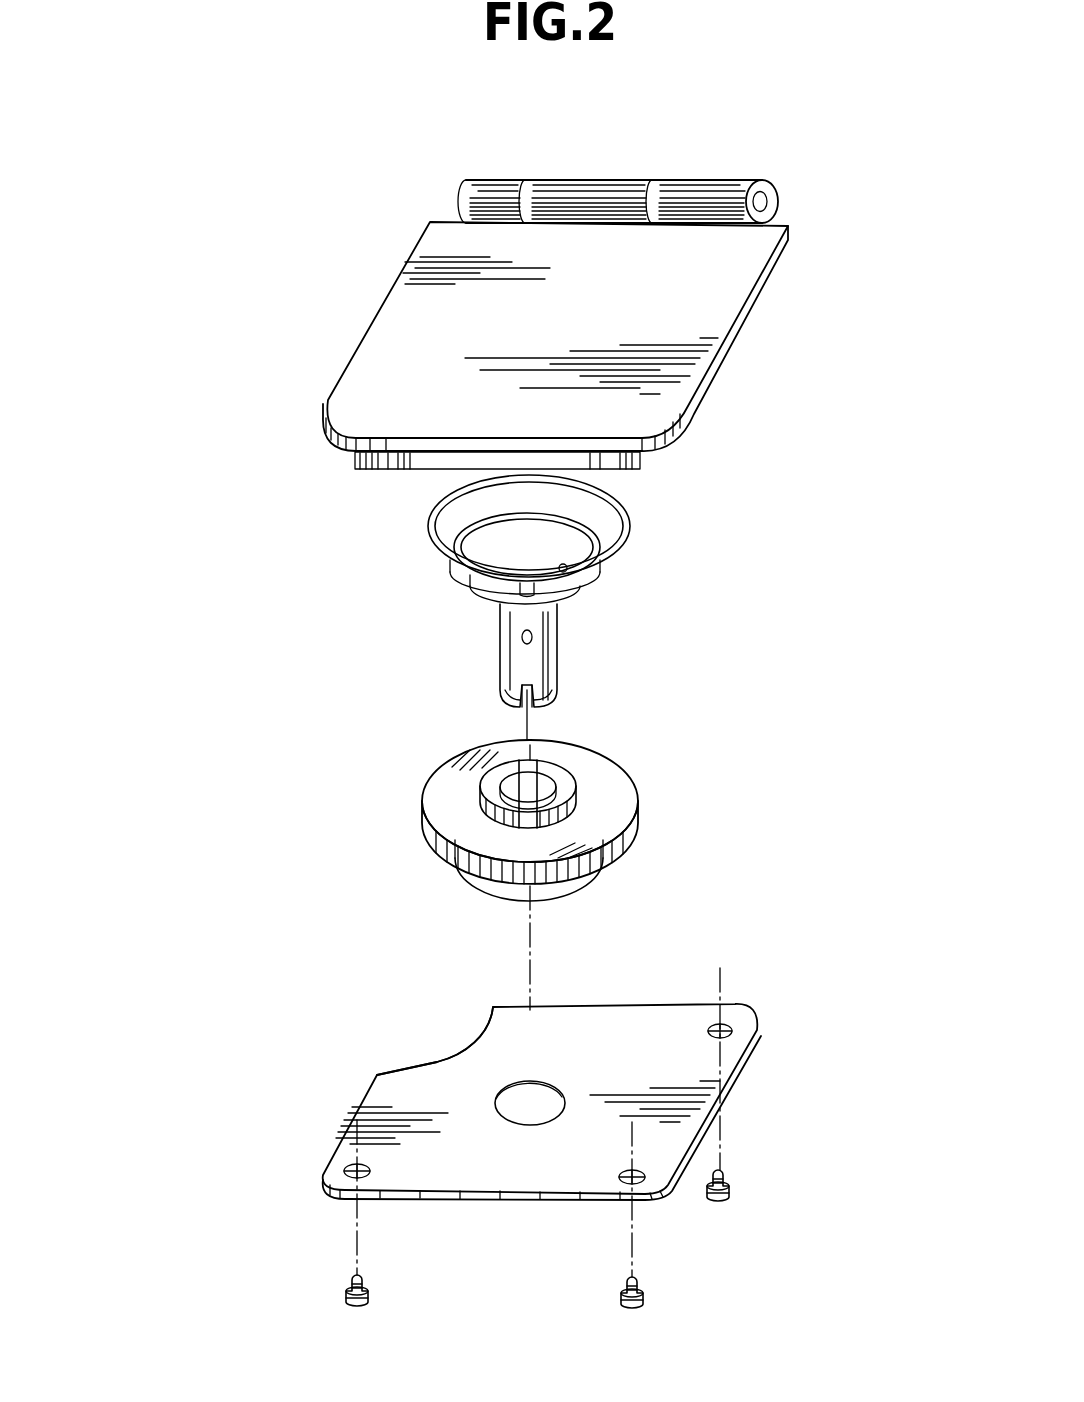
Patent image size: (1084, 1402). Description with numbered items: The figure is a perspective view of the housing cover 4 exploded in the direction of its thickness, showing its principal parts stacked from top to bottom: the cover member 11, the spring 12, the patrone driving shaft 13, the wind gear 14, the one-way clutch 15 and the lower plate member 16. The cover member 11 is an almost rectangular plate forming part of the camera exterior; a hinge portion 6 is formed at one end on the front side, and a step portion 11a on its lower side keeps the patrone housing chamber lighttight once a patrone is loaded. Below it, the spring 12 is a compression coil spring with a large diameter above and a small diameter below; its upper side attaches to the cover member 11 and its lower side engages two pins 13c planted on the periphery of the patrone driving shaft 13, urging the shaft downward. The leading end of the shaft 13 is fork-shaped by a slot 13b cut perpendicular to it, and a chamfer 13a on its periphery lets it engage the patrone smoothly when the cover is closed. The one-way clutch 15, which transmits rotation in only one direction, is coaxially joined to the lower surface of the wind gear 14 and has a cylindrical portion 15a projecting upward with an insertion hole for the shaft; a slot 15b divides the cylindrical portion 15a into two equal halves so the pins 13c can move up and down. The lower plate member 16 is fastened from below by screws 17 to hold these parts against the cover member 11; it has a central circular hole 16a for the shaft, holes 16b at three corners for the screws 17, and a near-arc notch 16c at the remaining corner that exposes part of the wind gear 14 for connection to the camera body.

The housing cover 4 is at (694, 633).
The hinge portion 6 is at (714, 193).
The cover member 11 is at (405, 310).
The step portion 11a is at (380, 462).
The spring 12 is at (425, 530).
The patrone driving shaft 13 is at (498, 666).
The chamfer 13a is at (548, 697).
The slot 13b is at (523, 705).
The pins 13c is at (535, 633).
The wind gear 14 is at (450, 795).
The one-way clutch 15 is at (488, 888).
The cylindrical portion 15a is at (575, 787).
The slot 15b is at (570, 820).
The lower plate member 16 is at (392, 1117).
The circular hole 16a is at (545, 1100).
The holes 16b is at (332, 1162).
The notch 16c is at (437, 1060).
The screws 17 is at (345, 1300).